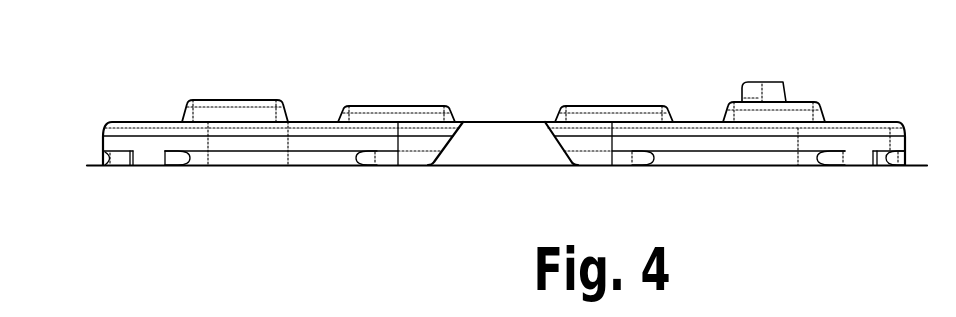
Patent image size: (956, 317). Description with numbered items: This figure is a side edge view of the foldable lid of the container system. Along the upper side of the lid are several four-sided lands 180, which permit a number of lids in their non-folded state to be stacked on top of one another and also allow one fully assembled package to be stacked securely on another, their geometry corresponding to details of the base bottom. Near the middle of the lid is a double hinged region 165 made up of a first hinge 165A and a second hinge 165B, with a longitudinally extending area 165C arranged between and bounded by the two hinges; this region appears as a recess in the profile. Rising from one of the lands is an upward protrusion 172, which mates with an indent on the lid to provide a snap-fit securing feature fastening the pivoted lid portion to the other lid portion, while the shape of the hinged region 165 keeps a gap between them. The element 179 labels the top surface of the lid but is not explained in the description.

The recess 165 is at (529, 129).
The first side wall of recess 165A is at (528, 120).
The second side wall of recess 165B is at (477, 121).
The bottom wall of recess 165C is at (485, 122).
The connector 172 is at (760, 83).
The top panel 179 is at (312, 118).
The raised portions 180 is at (228, 103).